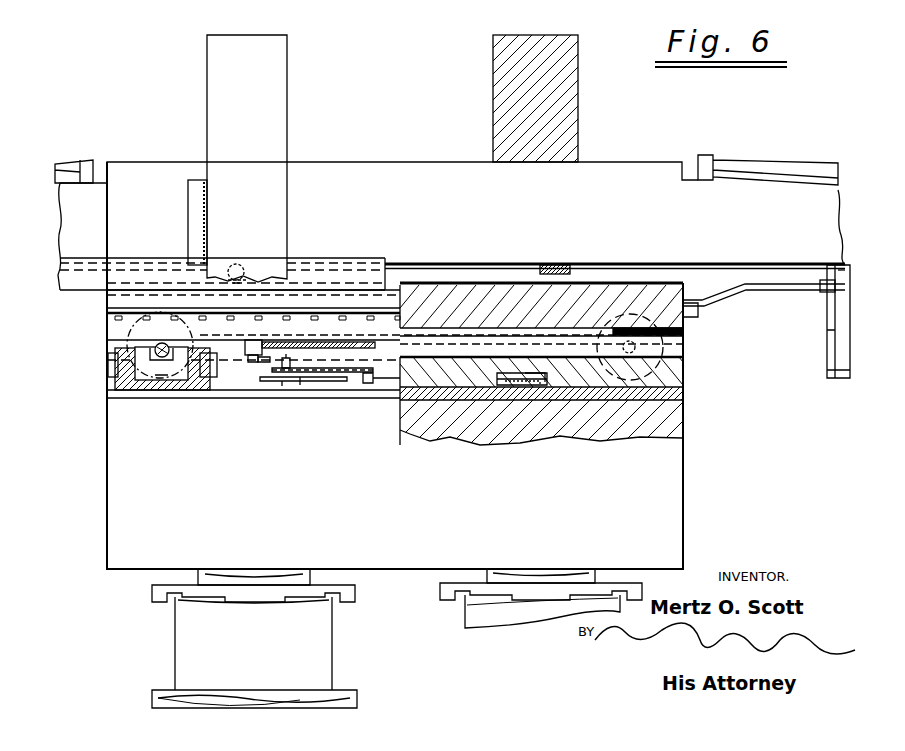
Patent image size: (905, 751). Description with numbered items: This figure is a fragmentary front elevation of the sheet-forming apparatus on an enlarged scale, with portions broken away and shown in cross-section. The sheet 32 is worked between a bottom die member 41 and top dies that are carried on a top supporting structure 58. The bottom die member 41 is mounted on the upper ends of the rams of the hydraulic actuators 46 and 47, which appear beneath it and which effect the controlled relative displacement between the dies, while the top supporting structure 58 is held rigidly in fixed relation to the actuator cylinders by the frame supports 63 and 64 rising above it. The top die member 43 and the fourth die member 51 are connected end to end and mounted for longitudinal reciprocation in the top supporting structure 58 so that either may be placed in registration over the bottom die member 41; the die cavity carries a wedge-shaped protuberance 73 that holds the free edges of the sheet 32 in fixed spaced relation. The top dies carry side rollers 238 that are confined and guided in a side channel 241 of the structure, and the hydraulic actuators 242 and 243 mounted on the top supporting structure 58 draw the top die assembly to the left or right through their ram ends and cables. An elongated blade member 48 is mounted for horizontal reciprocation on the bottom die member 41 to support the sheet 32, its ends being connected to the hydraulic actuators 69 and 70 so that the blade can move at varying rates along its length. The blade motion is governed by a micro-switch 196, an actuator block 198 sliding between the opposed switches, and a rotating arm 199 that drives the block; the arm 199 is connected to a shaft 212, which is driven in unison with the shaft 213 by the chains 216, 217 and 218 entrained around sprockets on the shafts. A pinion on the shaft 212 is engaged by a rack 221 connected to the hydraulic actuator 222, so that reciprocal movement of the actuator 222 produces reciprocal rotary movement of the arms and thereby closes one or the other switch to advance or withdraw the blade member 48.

The sheet 32 is at (445, 352).
The bottom die member 41 is at (686, 373).
The top die member 43 is at (685, 317).
The hydraulic actuator 46 is at (333, 633).
The hydraulic actuator 47 is at (465, 622).
The blade member 48 is at (280, 342).
The fourth die member 51 is at (833, 378).
The top supporting structure 58 is at (394, 162).
The frame support 63 is at (213, 61).
The frame support 64 is at (572, 80).
The hydraulic actuator 69 is at (665, 345).
The hydraulic actuator 70 is at (130, 332).
The protuberance 73 is at (514, 330).
The micro-switch 196 is at (256, 340).
The actuator block 198 is at (251, 361).
The arm 199 is at (262, 363).
The shaft 212 is at (292, 360).
The shaft 213 is at (522, 386).
The chain 216 is at (342, 373).
The chain 217 is at (502, 386).
The chain 218 is at (528, 378).
The rack 221 is at (320, 382).
The hydraulic actuator 222 is at (391, 384).
The side roller 238 is at (232, 264).
The side channel 241 is at (633, 262).
The hydraulic actuator 242 is at (70, 160).
The hydraulic actuator 243 is at (757, 162).